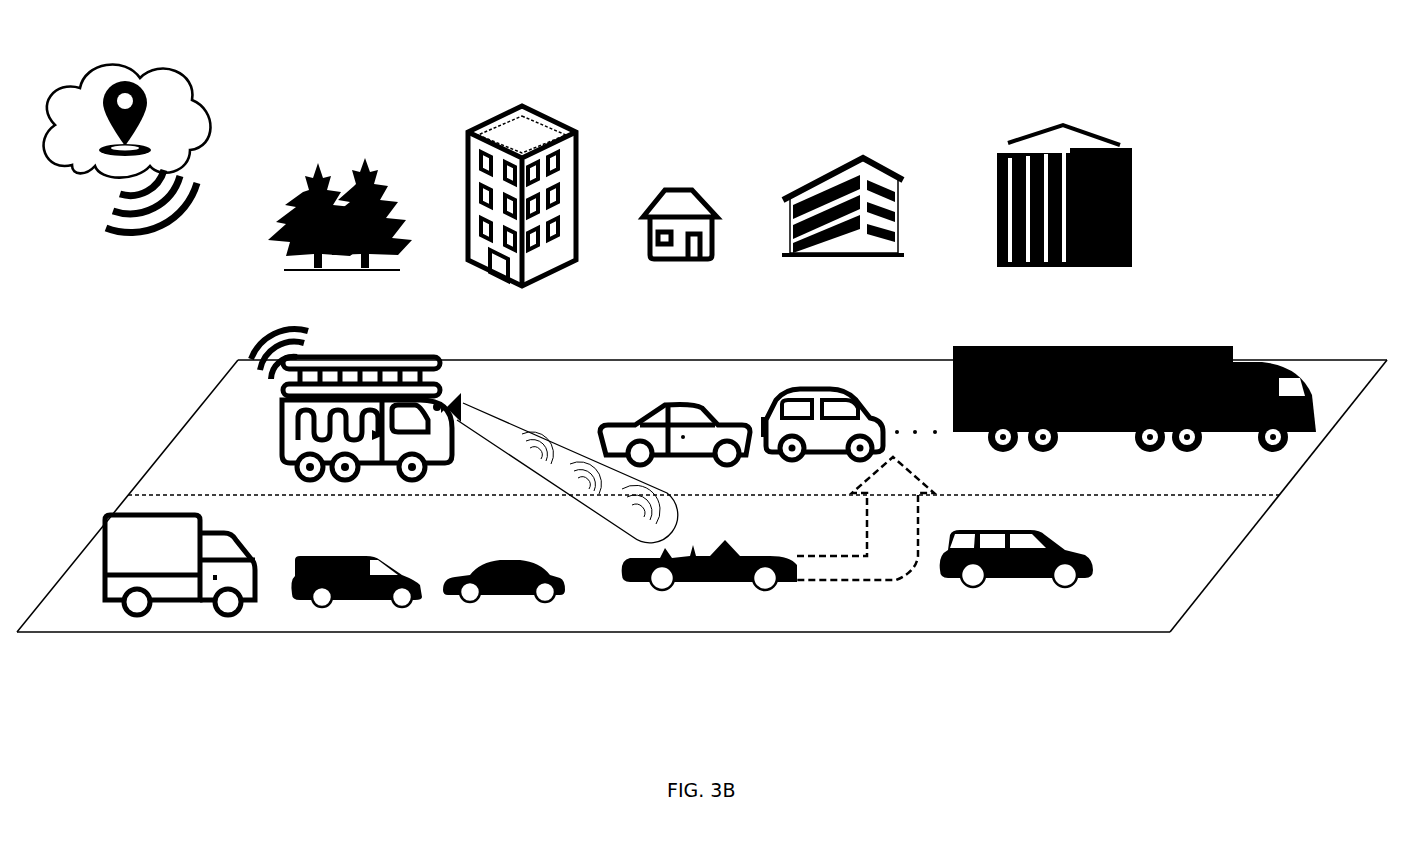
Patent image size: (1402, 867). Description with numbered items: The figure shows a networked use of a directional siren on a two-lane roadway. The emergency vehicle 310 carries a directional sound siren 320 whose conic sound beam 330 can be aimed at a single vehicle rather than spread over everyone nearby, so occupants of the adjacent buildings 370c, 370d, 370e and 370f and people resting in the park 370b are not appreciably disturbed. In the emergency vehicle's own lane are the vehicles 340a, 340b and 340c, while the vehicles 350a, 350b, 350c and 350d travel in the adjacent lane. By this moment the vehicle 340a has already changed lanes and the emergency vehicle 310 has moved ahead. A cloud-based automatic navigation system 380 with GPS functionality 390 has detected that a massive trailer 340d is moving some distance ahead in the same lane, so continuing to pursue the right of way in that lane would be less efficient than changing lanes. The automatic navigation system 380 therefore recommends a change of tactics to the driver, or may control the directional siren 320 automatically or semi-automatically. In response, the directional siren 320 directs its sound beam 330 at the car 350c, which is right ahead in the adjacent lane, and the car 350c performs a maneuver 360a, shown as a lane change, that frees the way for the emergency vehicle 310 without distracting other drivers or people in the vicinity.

The emergency vehicle 310 is at (370, 358).
The directional sound siren 320 is at (457, 395).
The sound beam 330 is at (523, 420).
The vehicle 340a is at (366, 558).
The vehicle 340b is at (682, 405).
The vehicle 340c is at (835, 392).
The massive trailer 340d is at (1190, 348).
The vehicle 350a is at (250, 549).
The vehicle 350b is at (472, 562).
The car 350c is at (743, 556).
The vehicle 350d is at (1044, 540).
The maneuver 360a is at (880, 582).
The park 370b is at (300, 188).
The building 370c is at (466, 166).
The building 370d is at (678, 190).
The building 370e is at (826, 180).
The building (environment object) 370f is at (992, 165).
The cloud-based automatic navigation system 380 is at (268, 80).
The GPS functionality 390 is at (143, 108).